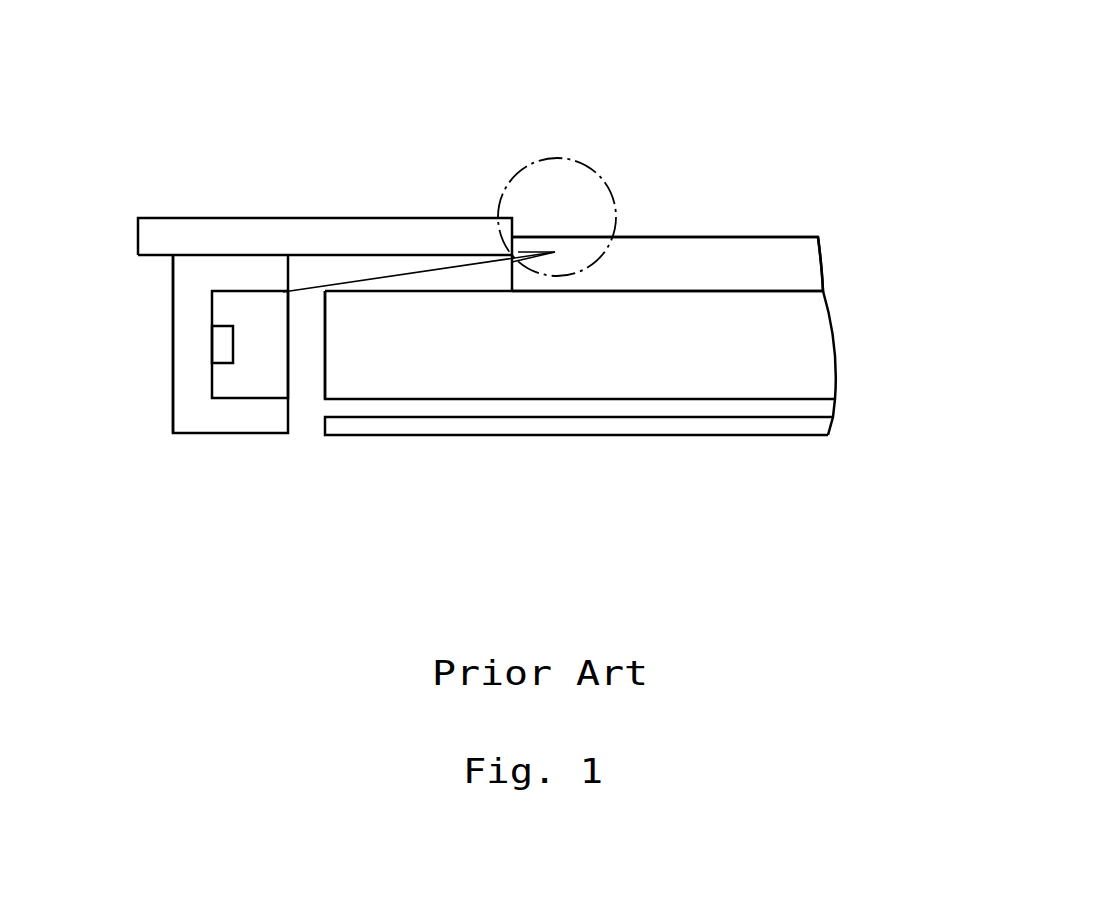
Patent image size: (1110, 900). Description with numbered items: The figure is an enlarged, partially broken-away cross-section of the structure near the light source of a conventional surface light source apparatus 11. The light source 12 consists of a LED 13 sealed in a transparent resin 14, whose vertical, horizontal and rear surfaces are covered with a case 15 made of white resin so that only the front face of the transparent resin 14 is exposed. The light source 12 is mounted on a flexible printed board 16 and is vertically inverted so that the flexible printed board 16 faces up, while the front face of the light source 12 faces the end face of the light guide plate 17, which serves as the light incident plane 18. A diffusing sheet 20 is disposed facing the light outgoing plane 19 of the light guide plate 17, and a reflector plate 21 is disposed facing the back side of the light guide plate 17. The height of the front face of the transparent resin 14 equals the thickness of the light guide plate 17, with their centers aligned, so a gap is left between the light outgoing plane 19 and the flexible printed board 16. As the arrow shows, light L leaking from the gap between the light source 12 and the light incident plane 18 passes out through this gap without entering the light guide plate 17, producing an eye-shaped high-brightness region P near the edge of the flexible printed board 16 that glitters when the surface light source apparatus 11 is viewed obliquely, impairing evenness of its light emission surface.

The surface light source apparatus 11 is at (750, 65).
The light source 12 is at (173, 363).
The LED 13 is at (226, 350).
The transparent resin 14 is at (250, 312).
The case 15 is at (205, 272).
The flexible printed board 16 is at (372, 232).
The light guide plate 17 is at (527, 368).
The light incident plane 18 is at (322, 372).
The light outgoing plane 19 is at (683, 290).
The diffusing sheet 20 is at (755, 270).
The reflector plate 21 is at (657, 425).
The light L is at (430, 270).
The high-brightness region P is at (549, 175).